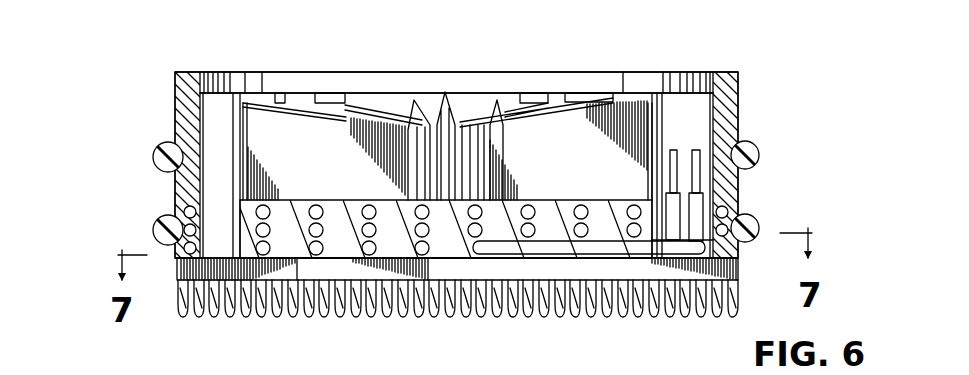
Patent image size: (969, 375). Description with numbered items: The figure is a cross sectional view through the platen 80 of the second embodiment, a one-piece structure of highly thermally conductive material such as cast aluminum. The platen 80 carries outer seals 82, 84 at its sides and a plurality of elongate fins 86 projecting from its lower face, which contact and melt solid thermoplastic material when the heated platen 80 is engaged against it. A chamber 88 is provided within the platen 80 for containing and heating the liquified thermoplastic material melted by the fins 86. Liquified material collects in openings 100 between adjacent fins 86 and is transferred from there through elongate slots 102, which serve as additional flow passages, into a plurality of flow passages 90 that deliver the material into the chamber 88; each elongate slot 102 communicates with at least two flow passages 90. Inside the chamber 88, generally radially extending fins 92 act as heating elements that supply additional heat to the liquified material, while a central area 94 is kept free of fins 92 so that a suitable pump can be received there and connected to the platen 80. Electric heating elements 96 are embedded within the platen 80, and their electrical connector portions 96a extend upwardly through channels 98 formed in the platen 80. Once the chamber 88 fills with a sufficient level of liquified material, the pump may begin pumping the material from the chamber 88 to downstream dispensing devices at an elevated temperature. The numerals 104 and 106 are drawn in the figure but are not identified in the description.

The platen 80 is at (750, 75).
The outer seal 82 is at (759, 156).
The outer seal 84 is at (759, 227).
The elongate fins 86 is at (245, 310).
The chamber 88 is at (584, 81).
The flow passages 90 is at (227, 97).
The radially extending fins 92 is at (453, 102).
The central area 94 is at (502, 58).
The electric heating elements 96 is at (578, 205).
The electrical connector portions 96a is at (676, 150).
The channels 98 is at (295, 100).
The openings 100 is at (707, 314).
The elongate slots 102 is at (488, 270).
The base block 104 is at (297, 258).
The contact holes 106 is at (340, 255).